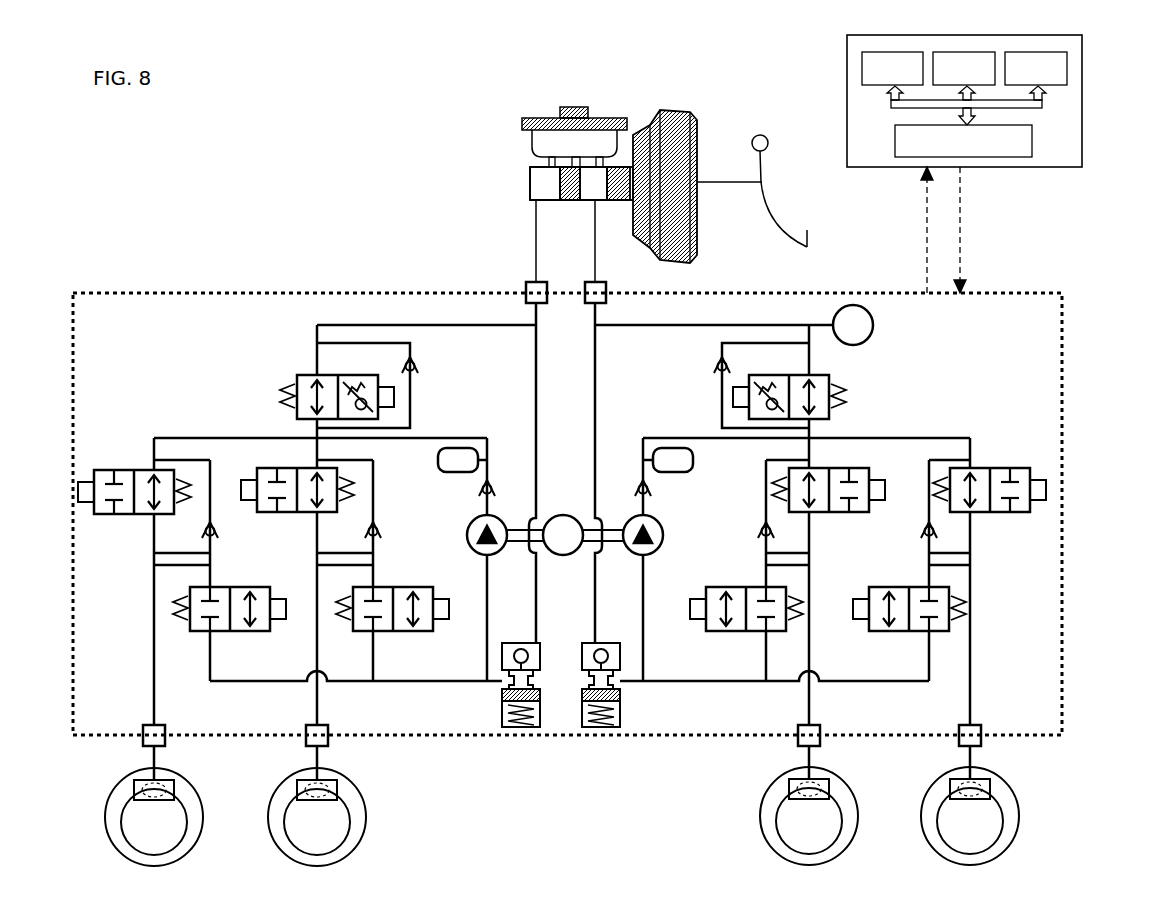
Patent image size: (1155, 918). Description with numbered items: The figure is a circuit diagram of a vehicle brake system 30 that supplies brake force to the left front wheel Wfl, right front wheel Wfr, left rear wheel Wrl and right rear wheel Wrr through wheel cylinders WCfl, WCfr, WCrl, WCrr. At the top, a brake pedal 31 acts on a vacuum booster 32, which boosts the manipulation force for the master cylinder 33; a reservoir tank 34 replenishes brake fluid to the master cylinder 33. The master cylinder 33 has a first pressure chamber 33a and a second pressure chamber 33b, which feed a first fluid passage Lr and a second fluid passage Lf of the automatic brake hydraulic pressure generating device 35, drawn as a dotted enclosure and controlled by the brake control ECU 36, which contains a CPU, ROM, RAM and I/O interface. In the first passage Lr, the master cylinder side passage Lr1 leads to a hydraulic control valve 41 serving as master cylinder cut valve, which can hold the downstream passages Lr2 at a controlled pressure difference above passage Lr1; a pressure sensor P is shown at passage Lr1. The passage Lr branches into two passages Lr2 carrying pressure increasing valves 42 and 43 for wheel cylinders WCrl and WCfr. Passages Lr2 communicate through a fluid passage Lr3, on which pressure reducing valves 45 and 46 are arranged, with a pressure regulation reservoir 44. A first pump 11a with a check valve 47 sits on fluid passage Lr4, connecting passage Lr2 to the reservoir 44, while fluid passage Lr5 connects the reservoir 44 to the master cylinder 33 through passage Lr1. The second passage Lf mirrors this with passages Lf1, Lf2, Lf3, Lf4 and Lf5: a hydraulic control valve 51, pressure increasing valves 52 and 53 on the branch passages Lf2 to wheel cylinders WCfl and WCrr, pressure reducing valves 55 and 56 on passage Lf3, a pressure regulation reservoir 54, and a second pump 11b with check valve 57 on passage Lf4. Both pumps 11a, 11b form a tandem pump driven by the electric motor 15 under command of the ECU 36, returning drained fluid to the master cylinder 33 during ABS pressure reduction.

The vehicle brake system 30 is at (390, 190).
The brake pedal 31 is at (770, 200).
The vacuum booster 32 is at (670, 112).
The master cylinder 33 is at (547, 218).
The first pressure chamber 33a is at (593, 198).
The second pressure chamber 33b is at (530, 187).
The reservoir tank 34 is at (573, 107).
The automatic brake hydraulic pressure generating device 35 is at (997, 293).
The brake control ECU 36 is at (1082, 95).
The hydraulic control valve 41 is at (830, 375).
The pressure increasing valve 42 is at (835, 468).
The pressure increasing valve 43 is at (990, 468).
The pressure regulation reservoir 44 is at (600, 727).
The pressure reducing valve 45 is at (740, 632).
The pressure reducing valve 46 is at (907, 630).
The check valve 47 is at (655, 493).
The hydraulic control valve 51 is at (300, 375).
The pressure increasing valve 52 is at (135, 470).
The pressure increasing valve 53 is at (290, 468).
The pressure regulation reservoir 54 is at (520, 727).
The pressure reducing valve 55 is at (230, 632).
The pressure reducing valve 56 is at (393, 632).
The check valve 57 is at (478, 492).
The first pump 11a is at (663, 535).
The second pump 11b is at (467, 535).
The electric motor 15 is at (563, 514).
The pressure sensor P is at (853, 325).
The second fluid passage Lf is at (365, 316).
The first fluid passage Lr is at (763, 316).
The fluid passage Lf1 is at (410, 325).
The branch fluid passages Lf2 is at (148, 538).
The fluid passage Lf3 is at (360, 683).
The fluid passage Lf4 is at (445, 438).
The fluid passage Lf5 is at (536, 378).
The fluid passage Lr1 is at (685, 325).
The branch fluid passages Lr2 is at (814, 575).
The fluid passage Lr3 is at (765, 683).
The fluid passage Lr4 is at (708, 438).
The fluid passage Lr5 is at (595, 378).
The left front wheel Wfl is at (198, 812).
The right rear wheel Wrr is at (361, 812).
The left rear wheel Wrl is at (845, 812).
The right front wheel Wfr is at (1013, 800).
The wheel cylinder WCfl is at (150, 781).
The wheel cylinder WCrr is at (314, 781).
The wheel cylinder WCrl is at (806, 781).
The wheel cylinder WCfr is at (967, 781).